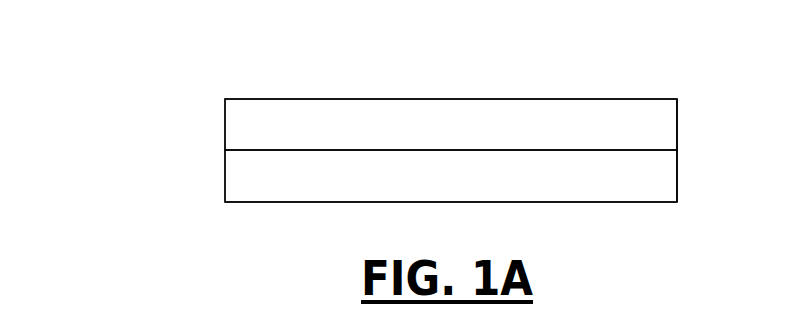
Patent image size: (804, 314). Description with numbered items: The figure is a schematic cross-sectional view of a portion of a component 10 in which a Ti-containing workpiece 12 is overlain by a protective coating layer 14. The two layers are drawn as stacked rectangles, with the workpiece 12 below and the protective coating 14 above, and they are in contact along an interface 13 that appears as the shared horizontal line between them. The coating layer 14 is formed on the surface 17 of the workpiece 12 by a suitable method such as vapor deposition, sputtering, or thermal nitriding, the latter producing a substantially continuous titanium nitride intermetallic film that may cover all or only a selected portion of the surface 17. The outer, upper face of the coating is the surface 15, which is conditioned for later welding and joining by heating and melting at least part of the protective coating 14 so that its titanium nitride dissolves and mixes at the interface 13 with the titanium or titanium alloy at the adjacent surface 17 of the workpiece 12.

The component 10 is at (112, 80).
The Ti-containing workpiece 12 is at (238, 190).
The interface 13 is at (677, 150).
The protective coating layer 14 is at (238, 131).
The surface 15 is at (540, 99).
The surface of the workpiece 17 is at (654, 149).